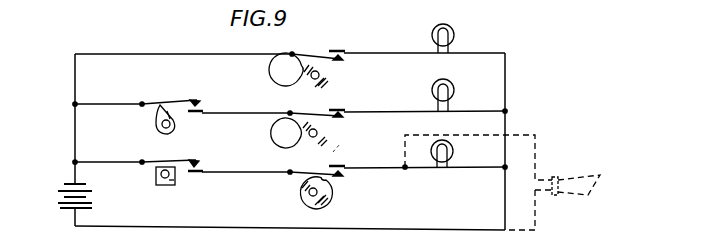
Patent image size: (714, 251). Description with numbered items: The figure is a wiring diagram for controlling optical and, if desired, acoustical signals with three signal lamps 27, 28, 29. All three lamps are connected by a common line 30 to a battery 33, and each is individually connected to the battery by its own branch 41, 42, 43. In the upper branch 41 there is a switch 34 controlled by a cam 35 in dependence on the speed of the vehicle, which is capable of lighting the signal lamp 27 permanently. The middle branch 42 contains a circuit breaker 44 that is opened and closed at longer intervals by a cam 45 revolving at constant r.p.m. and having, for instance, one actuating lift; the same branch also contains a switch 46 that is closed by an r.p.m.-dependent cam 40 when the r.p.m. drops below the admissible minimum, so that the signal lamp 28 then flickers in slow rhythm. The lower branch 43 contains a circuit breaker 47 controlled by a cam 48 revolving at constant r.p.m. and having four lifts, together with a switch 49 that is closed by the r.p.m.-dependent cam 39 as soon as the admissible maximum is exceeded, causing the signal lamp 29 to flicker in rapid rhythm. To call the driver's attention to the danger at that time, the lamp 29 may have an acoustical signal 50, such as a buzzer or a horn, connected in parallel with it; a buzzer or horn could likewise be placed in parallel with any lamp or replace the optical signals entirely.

The signal lamp 27 is at (455, 34).
The signal lamp 28 is at (455, 89).
The signal lamp 29 is at (454, 151).
The line 30 is at (241, 230).
The battery 33 is at (62, 195).
The switch 34 is at (313, 57).
The cam 35 is at (332, 75).
The cam 39 is at (330, 191).
The cam 40 is at (328, 134).
The branch 41 is at (258, 56).
The branch 42 is at (248, 114).
The branch 43 is at (248, 173).
The circuit breaker 44 is at (179, 101).
The cam 45 is at (155, 126).
The switch 46 is at (318, 113).
The circuit breaker 47 is at (186, 161).
The cam 48 is at (169, 186).
The switch 49 is at (313, 173).
The acoustical signal 50 is at (575, 178).